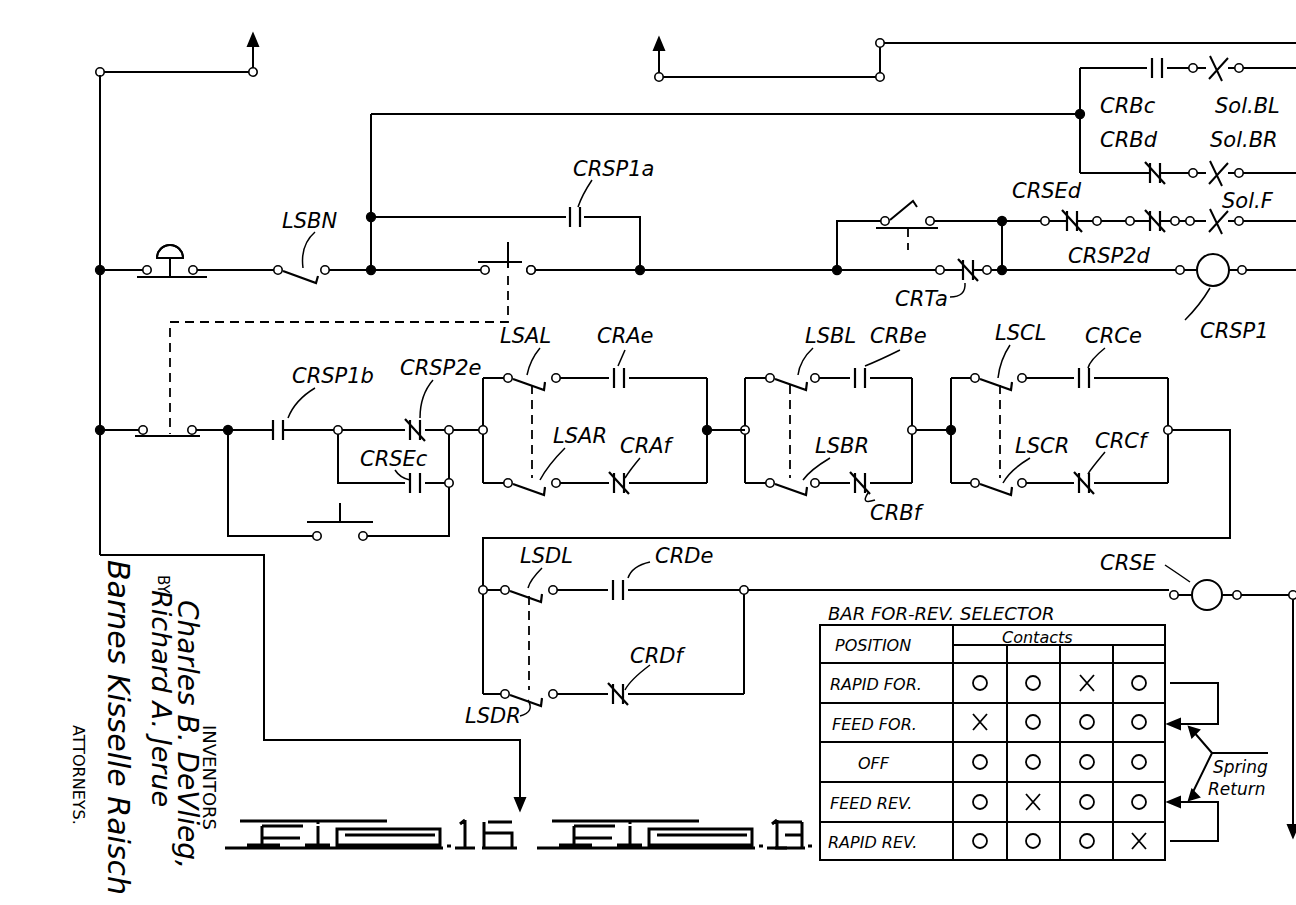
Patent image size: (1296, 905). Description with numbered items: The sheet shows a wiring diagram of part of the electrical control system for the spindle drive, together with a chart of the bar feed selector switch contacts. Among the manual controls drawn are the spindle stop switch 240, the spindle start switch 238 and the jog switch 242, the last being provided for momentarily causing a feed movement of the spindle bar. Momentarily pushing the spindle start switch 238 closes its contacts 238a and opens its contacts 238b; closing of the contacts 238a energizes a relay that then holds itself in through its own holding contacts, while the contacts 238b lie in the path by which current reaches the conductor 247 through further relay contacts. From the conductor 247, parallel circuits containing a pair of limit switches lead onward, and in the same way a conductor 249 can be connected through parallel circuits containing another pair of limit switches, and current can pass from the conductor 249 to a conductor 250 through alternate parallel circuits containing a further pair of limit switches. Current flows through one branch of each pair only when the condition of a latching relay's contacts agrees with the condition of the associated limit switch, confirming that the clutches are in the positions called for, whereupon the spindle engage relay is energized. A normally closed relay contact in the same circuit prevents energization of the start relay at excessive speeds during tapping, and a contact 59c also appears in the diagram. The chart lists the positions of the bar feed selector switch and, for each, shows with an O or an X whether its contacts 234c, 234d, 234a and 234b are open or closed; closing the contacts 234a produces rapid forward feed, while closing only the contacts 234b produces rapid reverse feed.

In FIG. 16, the conductor 247 is at (100, 150).
In FIG. 16, the spindle stop switch 240 is at (180, 250).
In FIG. 16, the spindle start switch 238 is at (496, 262).
In FIG. 16, the contacts of spindle start switch 238a is at (537, 268).
In FIG. 16, the contacts of spindle start switch 238b is at (196, 426).
In FIG. 16, the jog switch 242 is at (342, 542).
In FIG. 16, the switch 59c is at (903, 219).
In FIG. 16, the conductor 249 is at (1200, 430).
In FIG. 16, the conductor 250 is at (893, 575).
In FIG. 13, the contacts of bar feed selector switch 234a is at (1086, 752).
In FIG. 13, the contacts of bar feed selector switch 234b is at (1139, 752).
In FIG. 13, the contacts of bar feed selector switch 234c is at (980, 752).
In FIG. 13, the contacts of bar feed selector switch 234d is at (1033, 752).